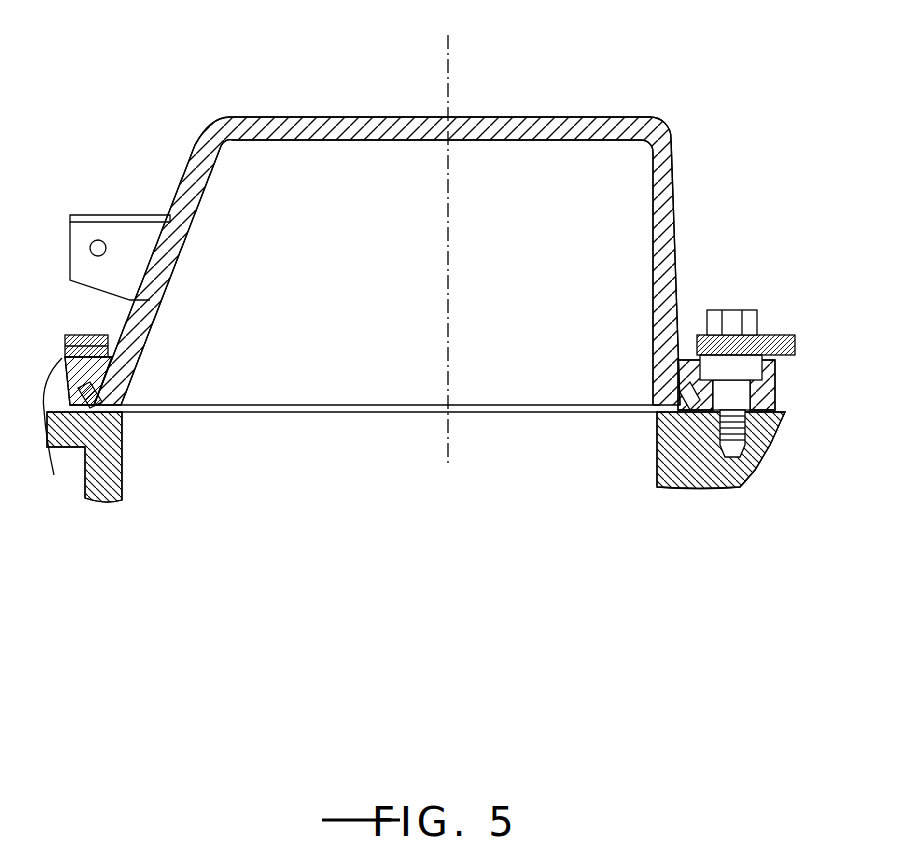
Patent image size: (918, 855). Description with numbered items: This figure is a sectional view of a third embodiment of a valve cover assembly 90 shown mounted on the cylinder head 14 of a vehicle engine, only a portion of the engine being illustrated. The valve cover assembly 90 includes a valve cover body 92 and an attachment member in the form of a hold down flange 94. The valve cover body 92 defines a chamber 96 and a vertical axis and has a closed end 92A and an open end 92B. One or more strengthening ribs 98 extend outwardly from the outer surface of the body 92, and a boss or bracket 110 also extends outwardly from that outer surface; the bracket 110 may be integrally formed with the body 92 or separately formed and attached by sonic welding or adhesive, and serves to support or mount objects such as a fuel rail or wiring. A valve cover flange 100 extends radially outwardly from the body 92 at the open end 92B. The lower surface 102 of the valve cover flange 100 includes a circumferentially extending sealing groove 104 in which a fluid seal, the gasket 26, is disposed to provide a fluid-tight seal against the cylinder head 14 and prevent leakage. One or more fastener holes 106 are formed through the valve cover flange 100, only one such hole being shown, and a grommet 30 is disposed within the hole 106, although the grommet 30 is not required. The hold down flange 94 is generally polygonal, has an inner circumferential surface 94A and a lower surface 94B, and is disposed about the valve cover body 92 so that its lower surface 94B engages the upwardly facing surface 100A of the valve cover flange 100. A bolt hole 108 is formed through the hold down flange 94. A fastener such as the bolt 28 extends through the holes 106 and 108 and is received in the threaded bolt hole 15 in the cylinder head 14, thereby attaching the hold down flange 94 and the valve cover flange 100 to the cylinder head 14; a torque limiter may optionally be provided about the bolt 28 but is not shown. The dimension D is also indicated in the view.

The cylinder head 14 is at (105, 455).
The threaded bolt hole 15 is at (735, 447).
The gasket 26 is at (662, 410).
The bolt 28 is at (735, 325).
The grommet 30 is at (710, 368).
The valve cover assembly 90 is at (270, 64).
The valve cover body 92 is at (431, 255).
The closed end 92A is at (431, 258).
The open end 92B is at (428, 398).
The hold down flange 94 is at (139, 344).
The inner circumferential surface 94A is at (141, 359).
The lower surface 94B is at (140, 375).
The chamber 96 is at (431, 258).
The strengthening ribs 98 is at (431, 291).
The valve cover flange 100 is at (69, 403).
The upwardly facing surface 100A is at (66, 342).
The lower surface 102 is at (122, 424).
The sealing groove 104 is at (118, 394).
The fastener holes 106 is at (755, 432).
The bolt hole 108 is at (766, 345).
The bracket 110 is at (88, 228).
The centerline axis D is at (452, 60).